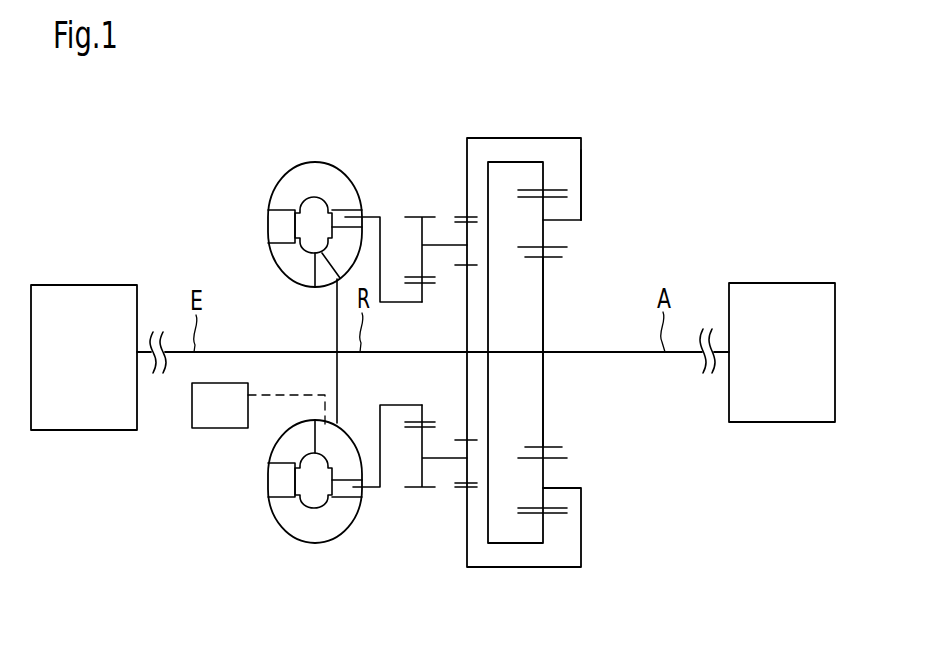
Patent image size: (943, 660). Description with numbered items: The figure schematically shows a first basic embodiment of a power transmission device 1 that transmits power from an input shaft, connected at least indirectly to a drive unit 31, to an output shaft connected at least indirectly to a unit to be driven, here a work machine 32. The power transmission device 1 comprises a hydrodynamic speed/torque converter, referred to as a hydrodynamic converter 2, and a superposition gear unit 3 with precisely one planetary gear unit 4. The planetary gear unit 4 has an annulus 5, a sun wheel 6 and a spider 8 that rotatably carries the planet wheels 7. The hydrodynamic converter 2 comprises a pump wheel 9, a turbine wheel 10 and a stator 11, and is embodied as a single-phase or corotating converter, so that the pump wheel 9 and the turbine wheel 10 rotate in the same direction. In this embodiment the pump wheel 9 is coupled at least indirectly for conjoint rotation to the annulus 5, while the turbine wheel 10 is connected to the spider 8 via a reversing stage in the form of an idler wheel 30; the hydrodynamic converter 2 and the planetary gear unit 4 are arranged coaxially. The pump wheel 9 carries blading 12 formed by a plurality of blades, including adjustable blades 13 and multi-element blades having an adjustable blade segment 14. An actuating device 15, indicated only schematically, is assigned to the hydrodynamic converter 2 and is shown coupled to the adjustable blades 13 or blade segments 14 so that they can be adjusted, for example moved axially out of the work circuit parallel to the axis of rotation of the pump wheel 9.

The power transmission device 1 is at (402, 102).
The hydrodynamic converter 2 is at (279, 247).
The superposition gear unit 3 is at (558, 122).
The planetary gear unit 4 is at (622, 162).
The annulus 5 is at (512, 162).
The sun wheel 6 is at (545, 302).
The planet wheels 7 is at (565, 212).
The spider 8 is at (581, 192).
The pump wheel 9 is at (354, 257).
The turbine wheel 10 is at (344, 217).
The stator 11 is at (278, 228).
The blading 12 is at (305, 277).
The adjustable blades 13 is at (328, 276).
The adjustable blade segment 14 is at (292, 334).
The actuating device 15 is at (231, 417).
The idler wheel 30 is at (442, 222).
The drive unit 31 is at (99, 369).
The work machine 32 is at (794, 358).